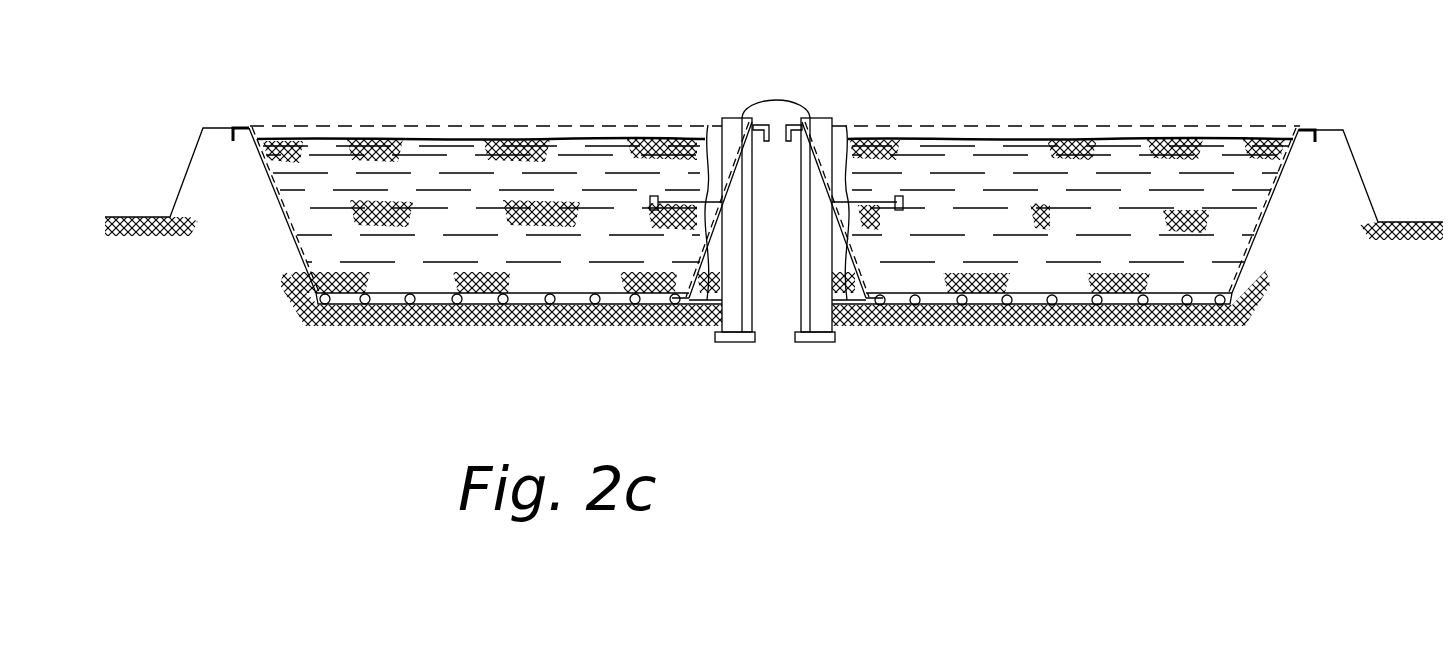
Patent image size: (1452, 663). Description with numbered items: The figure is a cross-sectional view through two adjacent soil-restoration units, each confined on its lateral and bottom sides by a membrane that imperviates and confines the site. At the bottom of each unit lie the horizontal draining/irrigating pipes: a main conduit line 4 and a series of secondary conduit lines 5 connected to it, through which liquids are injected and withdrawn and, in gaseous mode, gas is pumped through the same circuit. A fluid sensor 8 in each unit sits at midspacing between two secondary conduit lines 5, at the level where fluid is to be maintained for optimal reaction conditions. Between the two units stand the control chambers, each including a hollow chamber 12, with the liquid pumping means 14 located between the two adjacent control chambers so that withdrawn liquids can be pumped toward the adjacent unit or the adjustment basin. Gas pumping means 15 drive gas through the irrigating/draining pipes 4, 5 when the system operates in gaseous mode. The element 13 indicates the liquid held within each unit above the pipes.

The main conduit line 4 is at (433, 298).
The secondary conduit lines 5 is at (457, 306).
The fluid sensor 8 is at (650, 198).
The hollow chamber 12 is at (733, 322).
The liquid level surface 13 is at (410, 138).
The liquid pumping means 14 is at (792, 99).
The gas pumping means 15 is at (722, 114).